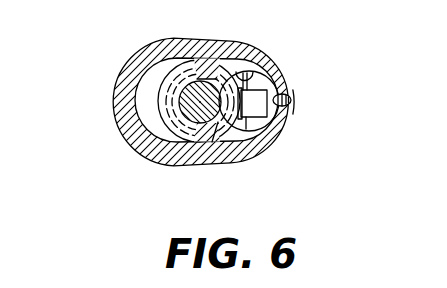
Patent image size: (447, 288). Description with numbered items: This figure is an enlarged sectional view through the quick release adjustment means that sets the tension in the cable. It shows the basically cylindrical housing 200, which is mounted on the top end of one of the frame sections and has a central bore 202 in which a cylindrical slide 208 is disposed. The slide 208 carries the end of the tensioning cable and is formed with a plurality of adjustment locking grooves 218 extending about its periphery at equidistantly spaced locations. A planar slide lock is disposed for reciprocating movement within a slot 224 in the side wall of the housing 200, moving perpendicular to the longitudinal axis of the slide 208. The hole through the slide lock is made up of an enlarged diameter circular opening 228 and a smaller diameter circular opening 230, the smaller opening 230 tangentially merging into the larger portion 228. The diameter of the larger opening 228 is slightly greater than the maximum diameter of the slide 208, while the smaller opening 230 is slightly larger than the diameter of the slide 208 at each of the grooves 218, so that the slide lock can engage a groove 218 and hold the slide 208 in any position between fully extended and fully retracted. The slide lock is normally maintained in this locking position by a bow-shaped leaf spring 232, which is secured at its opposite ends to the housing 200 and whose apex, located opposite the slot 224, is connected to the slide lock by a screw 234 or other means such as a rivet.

The housing 200 is at (117, 127).
The central bore 202 is at (143, 86).
The cylindrical slide 208 is at (196, 120).
The adjustment locking grooves 218 is at (217, 75).
The slot 224 is at (256, 103).
The enlarged diameter circular opening 228 is at (256, 72).
The smaller diameter circular opening 230 is at (195, 77).
The leaf spring 232 is at (285, 93).
The screw 234 is at (297, 102).